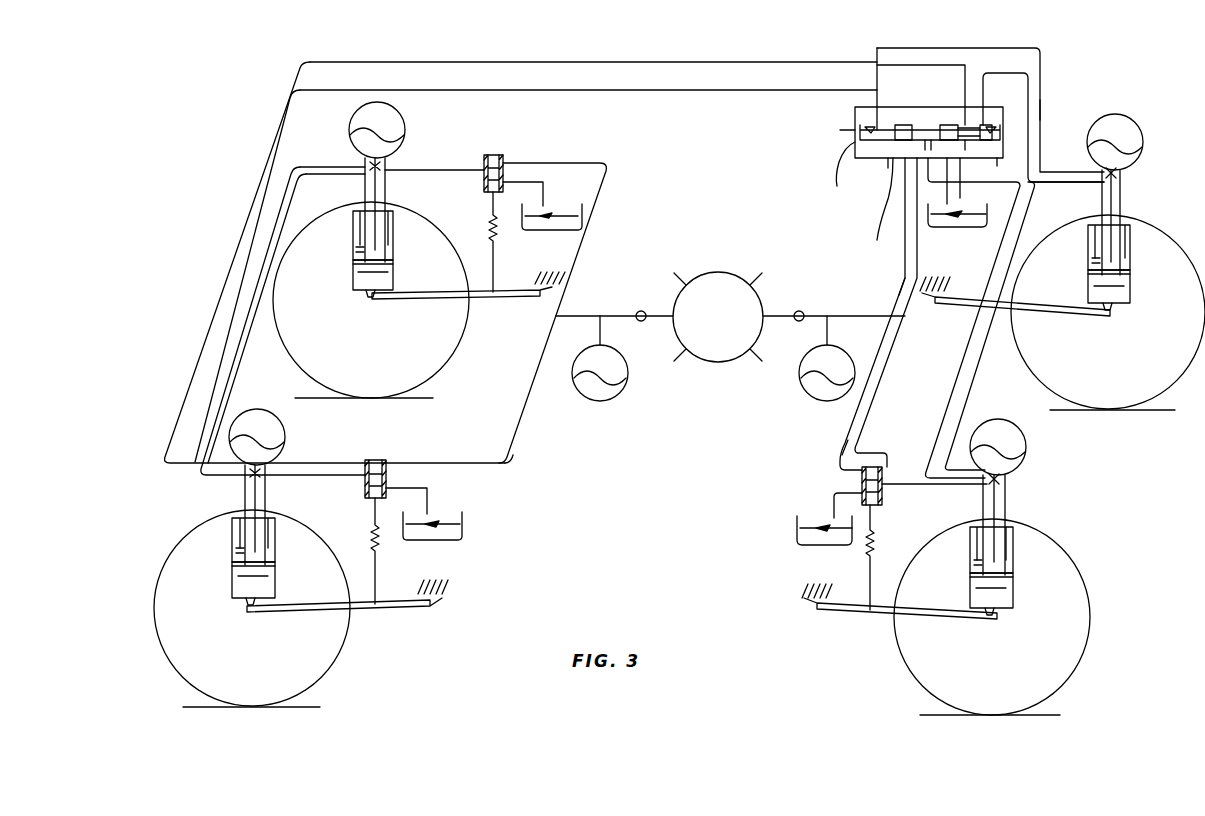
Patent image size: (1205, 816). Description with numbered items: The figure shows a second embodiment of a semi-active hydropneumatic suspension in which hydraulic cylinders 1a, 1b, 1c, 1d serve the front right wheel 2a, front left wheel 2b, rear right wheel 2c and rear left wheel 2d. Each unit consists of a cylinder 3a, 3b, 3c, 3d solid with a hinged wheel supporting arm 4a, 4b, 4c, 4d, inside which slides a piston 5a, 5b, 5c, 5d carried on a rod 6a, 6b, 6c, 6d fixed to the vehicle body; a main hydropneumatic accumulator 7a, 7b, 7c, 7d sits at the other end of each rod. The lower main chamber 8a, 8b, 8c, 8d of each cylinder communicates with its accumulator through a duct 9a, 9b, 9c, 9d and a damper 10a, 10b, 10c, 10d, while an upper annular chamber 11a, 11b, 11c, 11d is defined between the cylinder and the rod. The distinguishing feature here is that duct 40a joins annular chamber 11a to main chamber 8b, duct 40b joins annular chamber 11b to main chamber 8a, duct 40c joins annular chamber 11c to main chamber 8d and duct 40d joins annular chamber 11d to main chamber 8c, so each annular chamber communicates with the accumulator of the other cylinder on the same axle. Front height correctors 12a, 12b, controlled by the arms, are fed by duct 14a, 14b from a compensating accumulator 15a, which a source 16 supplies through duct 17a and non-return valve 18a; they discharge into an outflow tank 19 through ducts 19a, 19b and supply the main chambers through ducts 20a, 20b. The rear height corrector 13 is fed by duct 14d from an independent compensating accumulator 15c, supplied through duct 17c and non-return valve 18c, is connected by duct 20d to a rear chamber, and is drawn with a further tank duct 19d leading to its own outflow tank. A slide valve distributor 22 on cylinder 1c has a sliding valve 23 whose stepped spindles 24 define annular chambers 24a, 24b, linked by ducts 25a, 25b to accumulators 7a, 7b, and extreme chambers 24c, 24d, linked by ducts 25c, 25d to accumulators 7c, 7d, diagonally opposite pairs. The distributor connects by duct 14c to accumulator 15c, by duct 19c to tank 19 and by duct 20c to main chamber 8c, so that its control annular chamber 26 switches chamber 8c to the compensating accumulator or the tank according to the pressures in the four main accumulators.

The hydraulic cylinder 1a is at (406, 152).
The hydraulic cylinder 1b is at (286, 452).
The hydraulic cylinder 1c is at (1154, 122).
The hydraulic cylinder 1d is at (1044, 484).
The front right wheel 2a is at (442, 378).
The front left wheel 2b is at (347, 656).
The rear right wheel 2c is at (1144, 412).
The rear left wheel 2d is at (1082, 664).
The cylinder 3a is at (396, 272).
The cylinder 3b is at (275, 578).
The cylinder 3c is at (1130, 290).
The cylinder 3d is at (1015, 596).
The wheel supporting arm 4a is at (504, 308).
The wheel supporting arm 4b is at (412, 602).
The wheel supporting arm 4c is at (938, 302).
The wheel supporting arm 4d is at (842, 610).
The piston 5a is at (354, 262).
The piston 5b is at (232, 568).
The piston 5c is at (1130, 272).
The piston 5d is at (1012, 576).
The rod 6a is at (382, 184).
The rod 6b is at (280, 502).
The rod 6c is at (1124, 190).
The rod 6d is at (1007, 490).
The main hydropneumatic accumulator 7a is at (352, 118).
The main hydropneumatic accumulator 7b is at (276, 408).
The main hydropneumatic accumulator 7c is at (1110, 104).
The main hydropneumatic accumulator 7d is at (1020, 424).
The main chamber 8a is at (358, 282).
The main chamber 8b is at (240, 594).
The main chamber 8c is at (1096, 286).
The main chamber 8d is at (974, 584).
The duct 9a is at (379, 230).
The duct 9b is at (274, 544).
The duct 9c is at (1124, 232).
The duct 9d is at (1001, 538).
The damper 10a is at (392, 166).
The damper 10b is at (267, 468).
The damper 10c is at (1130, 170).
The damper 10d is at (1005, 472).
The annular chamber 11a is at (352, 240).
The annular chamber 11b is at (232, 542).
The annular chamber 11c is at (1095, 246).
The annular chamber 11d is at (975, 544).
The height corrector 12a is at (508, 152).
The height corrector 12b is at (402, 470).
The height corrector 13 is at (884, 460).
The duct 14a is at (614, 228).
The duct 14b is at (508, 462).
The duct 14c is at (900, 296).
The duct 14d is at (844, 452).
The hydropneumatic compensating accumulator 15a is at (596, 404).
The additional hydropneumatic compensating accumulator 15c is at (804, 394).
The source of fluid under pressure 16 is at (714, 282).
The duct 17a is at (634, 308).
The duct 17c is at (796, 298).
The non-return valve 18a is at (650, 296).
The non-return valve 18c is at (808, 306).
The outflow tank 19 is at (528, 230).
The duct 19a is at (542, 196).
The duct 19b is at (447, 518).
The duct 19c is at (948, 196).
The reservoir d 19d is at (818, 494).
The duct 20a is at (464, 164).
The duct 20b is at (344, 476).
The duct 20c is at (1022, 196).
The duct 20d is at (920, 492).
The slide valve distributor 22 is at (920, 48).
The sliding valve 23 is at (949, 128).
The shouldered or stepped spindle 24 is at (868, 156).
The annular chamber 24a is at (954, 156).
The annular chamber 24b is at (894, 162).
The extreme chamber 24c is at (842, 136).
The extreme chamber 24d is at (1002, 140).
The duct 25a is at (712, 60).
The duct 25b is at (706, 90).
The duct 25c is at (1042, 48).
The duct 25d is at (1040, 104).
The control annular chamber 26 is at (916, 126).
The duct 40a is at (236, 354).
The duct 40b is at (232, 320).
The duct 40c is at (971, 350).
The duct 40d is at (869, 382).